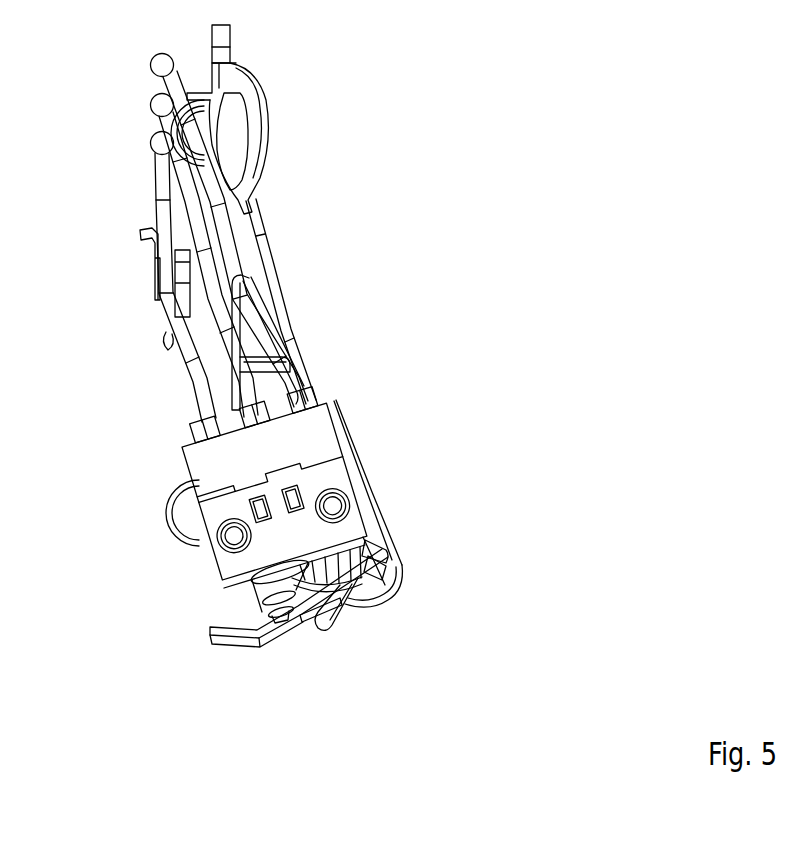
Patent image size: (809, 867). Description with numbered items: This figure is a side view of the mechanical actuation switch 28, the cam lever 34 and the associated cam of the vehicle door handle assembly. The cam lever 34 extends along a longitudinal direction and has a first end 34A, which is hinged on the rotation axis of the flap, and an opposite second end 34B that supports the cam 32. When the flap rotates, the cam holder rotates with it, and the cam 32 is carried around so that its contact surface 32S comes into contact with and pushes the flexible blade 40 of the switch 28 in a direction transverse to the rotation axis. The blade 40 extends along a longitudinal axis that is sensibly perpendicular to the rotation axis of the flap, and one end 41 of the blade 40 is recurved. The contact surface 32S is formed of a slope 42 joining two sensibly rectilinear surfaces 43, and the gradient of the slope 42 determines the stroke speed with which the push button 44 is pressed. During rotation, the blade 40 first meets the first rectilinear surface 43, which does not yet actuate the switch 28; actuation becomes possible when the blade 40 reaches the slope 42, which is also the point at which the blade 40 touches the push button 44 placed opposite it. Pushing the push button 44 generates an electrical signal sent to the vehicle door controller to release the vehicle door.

The first end 34A is at (287, 117).
The cam lever 34 is at (338, 345).
The mechanical actuation switch 28 is at (218, 465).
The second end 34B is at (443, 538).
The contact surface 32S is at (370, 553).
The cam 32 is at (433, 590).
The push button 44 is at (270, 611).
The flexible blade 40 is at (277, 645).
The end 41 is at (213, 637).
The slope 42 is at (358, 587).
The rectilinear surfaces 43 is at (338, 607).